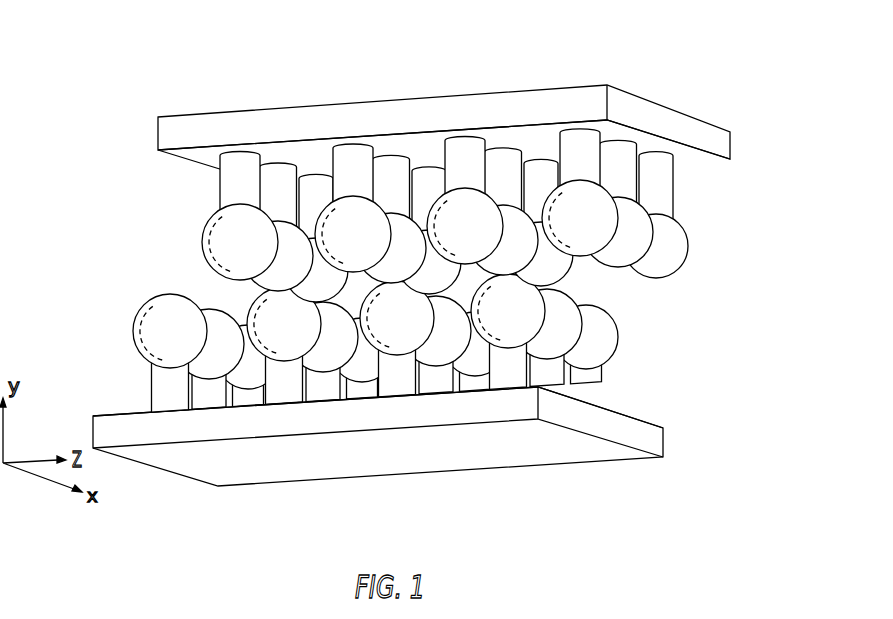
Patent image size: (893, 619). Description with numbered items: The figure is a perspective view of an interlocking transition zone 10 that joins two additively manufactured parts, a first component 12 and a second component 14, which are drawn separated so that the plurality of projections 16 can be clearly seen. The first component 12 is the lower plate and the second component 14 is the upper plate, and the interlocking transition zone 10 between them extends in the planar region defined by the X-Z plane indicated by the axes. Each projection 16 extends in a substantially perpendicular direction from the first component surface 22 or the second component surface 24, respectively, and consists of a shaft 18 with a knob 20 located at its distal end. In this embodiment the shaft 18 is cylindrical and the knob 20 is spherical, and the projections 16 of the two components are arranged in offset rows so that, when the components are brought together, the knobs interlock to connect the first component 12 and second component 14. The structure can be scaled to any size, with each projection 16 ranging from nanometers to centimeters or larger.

The interlocking transition zone 10 is at (424, 250).
The first component 12 is at (429, 431).
The second component 14 is at (471, 147).
The projection 16 is at (603, 330).
The shaft 18 is at (240, 180).
The knob 20 is at (240, 243).
The first component surface 22 is at (648, 417).
The second component surface 24 is at (700, 162).